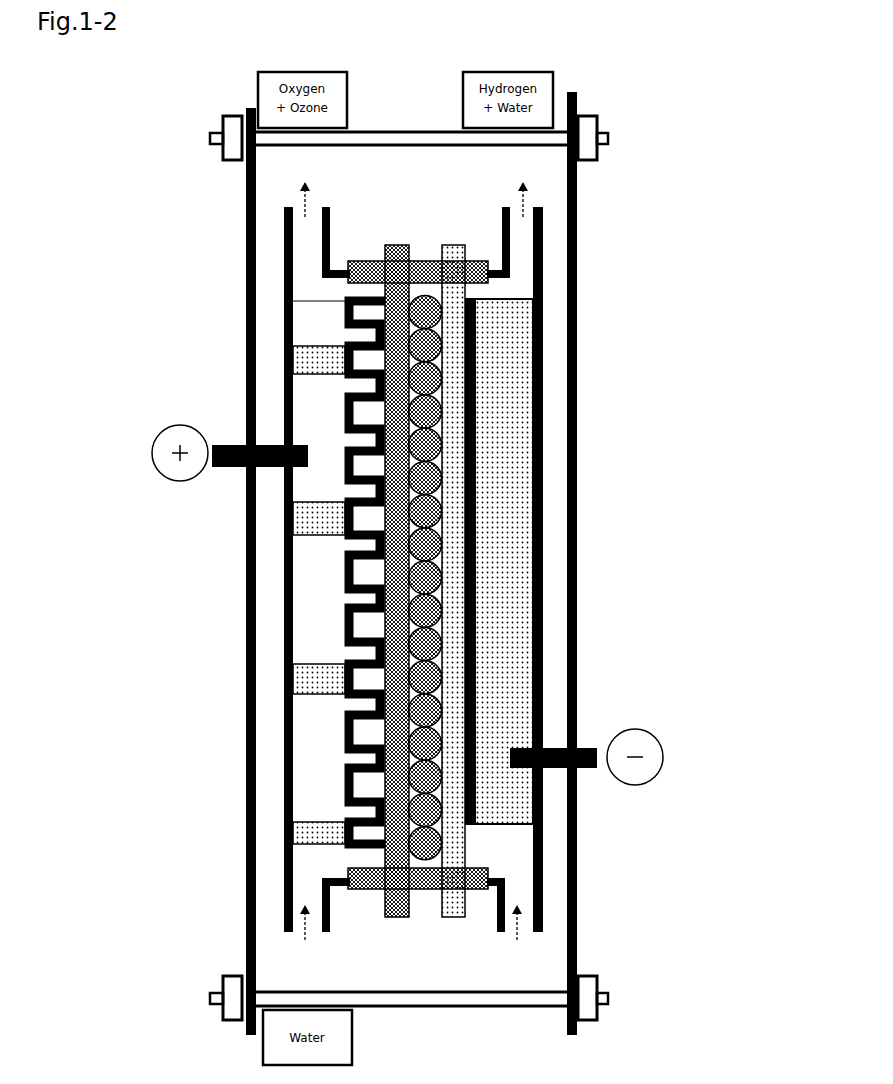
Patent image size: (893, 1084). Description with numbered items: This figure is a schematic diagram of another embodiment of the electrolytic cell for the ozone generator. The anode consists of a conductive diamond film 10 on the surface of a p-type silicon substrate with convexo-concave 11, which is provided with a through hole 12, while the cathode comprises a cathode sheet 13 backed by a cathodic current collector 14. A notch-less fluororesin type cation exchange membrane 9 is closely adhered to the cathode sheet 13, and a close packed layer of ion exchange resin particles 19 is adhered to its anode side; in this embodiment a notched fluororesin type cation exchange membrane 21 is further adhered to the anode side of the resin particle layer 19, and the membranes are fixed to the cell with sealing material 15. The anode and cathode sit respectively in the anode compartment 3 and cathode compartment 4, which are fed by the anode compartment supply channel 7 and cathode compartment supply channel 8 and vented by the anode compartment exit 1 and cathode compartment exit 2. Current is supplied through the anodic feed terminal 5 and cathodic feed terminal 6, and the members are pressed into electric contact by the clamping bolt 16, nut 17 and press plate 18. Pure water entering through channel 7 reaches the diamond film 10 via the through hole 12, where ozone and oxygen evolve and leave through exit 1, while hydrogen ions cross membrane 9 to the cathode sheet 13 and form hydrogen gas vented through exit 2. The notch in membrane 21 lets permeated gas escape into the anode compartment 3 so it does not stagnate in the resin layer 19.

The anode compartment exit 1 is at (310, 248).
The cathode compartment exit 2 is at (523, 252).
The anode compartment 3 is at (358, 291).
The cathode compartment 4 is at (522, 293).
The anodic feed terminal 5 is at (227, 445).
The cathodic feed terminal 6 is at (585, 748).
The anode compartment supply channel 7 is at (310, 887).
The cathode compartment supply channel 8 is at (520, 895).
The notch-less fluororesin type cation exchange membrane 9 is at (477, 427).
The conductive diamond film 10 is at (337, 573).
The p-type silicon substrate with convexo-concave 11 is at (307, 737).
The through hole 12 is at (290, 520).
The cathode sheet 13 is at (477, 472).
The cathodic current collector 14 is at (508, 520).
The sealing material 15 is at (513, 287).
The clamping bolt 16 is at (418, 130).
The nut 17 is at (588, 128).
The press plate 18 is at (578, 838).
The close packed layer of ion exchange resin particles 19 is at (340, 805).
The fluororesin type cation exchange membrane with notch 21 is at (380, 853).